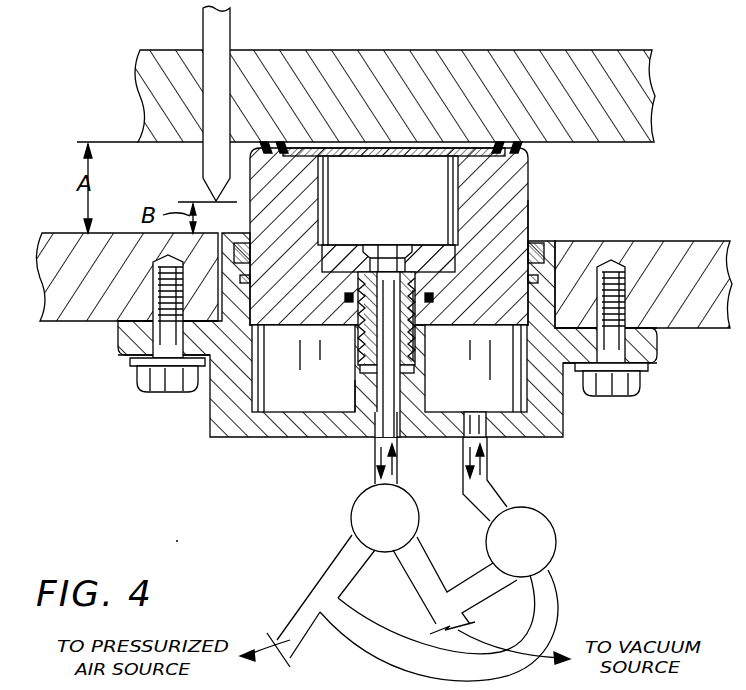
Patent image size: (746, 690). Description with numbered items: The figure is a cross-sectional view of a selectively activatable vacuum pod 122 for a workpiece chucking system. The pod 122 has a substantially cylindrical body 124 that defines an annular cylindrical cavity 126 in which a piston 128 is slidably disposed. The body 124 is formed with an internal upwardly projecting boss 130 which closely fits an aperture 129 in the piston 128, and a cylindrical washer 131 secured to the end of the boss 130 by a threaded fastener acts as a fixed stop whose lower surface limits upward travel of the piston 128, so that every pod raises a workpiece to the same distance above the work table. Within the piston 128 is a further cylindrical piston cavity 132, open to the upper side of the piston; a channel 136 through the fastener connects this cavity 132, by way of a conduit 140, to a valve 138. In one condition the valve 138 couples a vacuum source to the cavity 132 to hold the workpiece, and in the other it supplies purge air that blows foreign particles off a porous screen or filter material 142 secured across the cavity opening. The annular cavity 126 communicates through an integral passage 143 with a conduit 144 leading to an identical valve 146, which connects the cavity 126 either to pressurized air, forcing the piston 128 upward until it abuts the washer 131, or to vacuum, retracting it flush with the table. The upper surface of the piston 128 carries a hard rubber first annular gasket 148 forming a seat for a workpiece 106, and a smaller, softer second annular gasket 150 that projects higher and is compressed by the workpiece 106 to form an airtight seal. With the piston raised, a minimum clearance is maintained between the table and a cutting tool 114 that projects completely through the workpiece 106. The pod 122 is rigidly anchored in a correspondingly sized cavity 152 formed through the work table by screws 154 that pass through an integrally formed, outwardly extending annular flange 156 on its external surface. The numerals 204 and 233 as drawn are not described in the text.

The workpiece 106 is at (500, 50).
The cutting tool 114 is at (232, 20).
The mounting plate 204 is at (665, 243).
The vacuum pod 122 is at (540, 199).
The cylindrical body 124 is at (210, 425).
The annular cylindrical cavity 126 is at (389, 368).
The piston 128 is at (530, 222).
The aperture 129 is at (422, 312).
The boss 130 is at (357, 400).
The cylindrical washer 131 is at (432, 272).
The piston cavity 132 is at (388, 200).
The channel 136 is at (388, 437).
The valve 138 is at (420, 524).
The conduit 140 is at (398, 465).
The porous screen or filter material 142 is at (425, 158).
The integral passage 143 is at (486, 433).
The conduit 144 is at (483, 480).
The valve 146 is at (553, 528).
The first annular gasket 148 is at (520, 148).
The second annular gasket 150 is at (500, 160).
The cavity 152 is at (220, 322).
The screws 154 is at (138, 375).
The annular flange 156 is at (120, 333).
The piston 233 is at (358, 245).